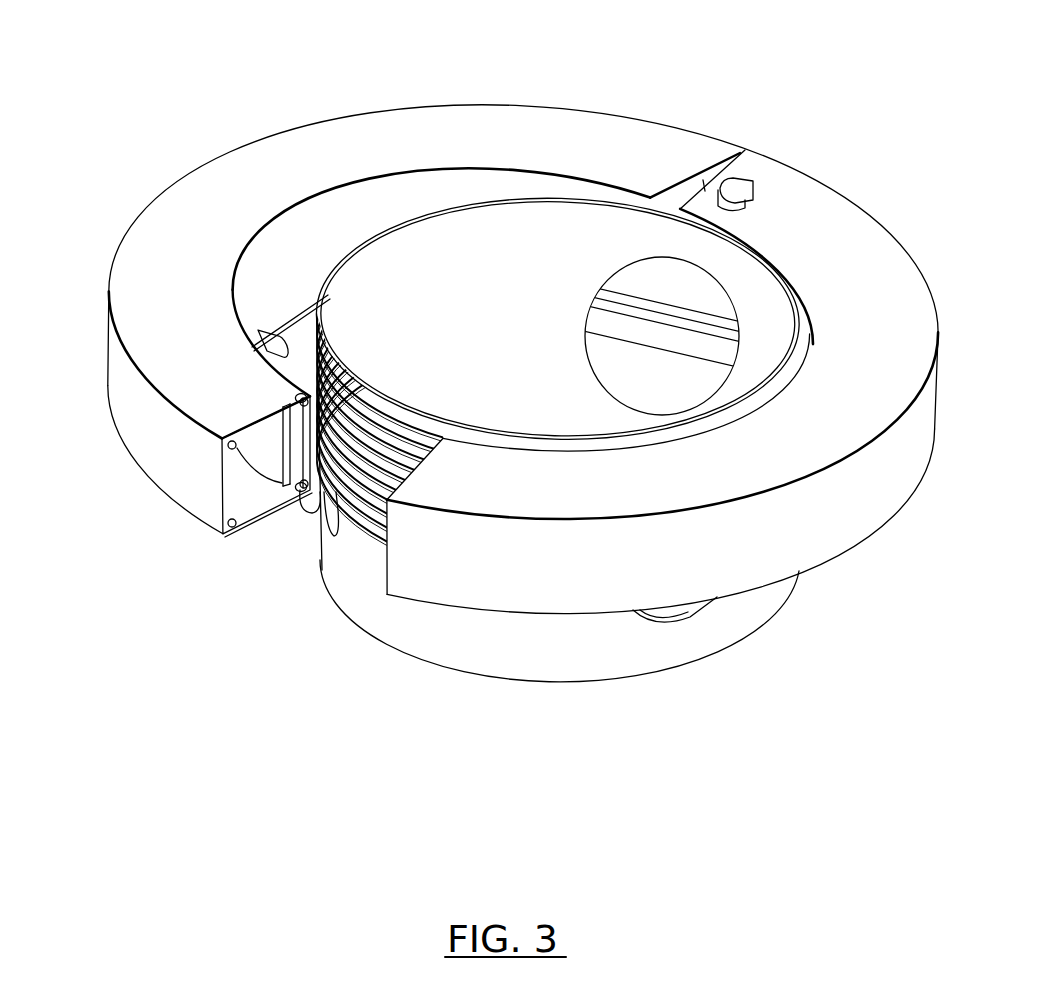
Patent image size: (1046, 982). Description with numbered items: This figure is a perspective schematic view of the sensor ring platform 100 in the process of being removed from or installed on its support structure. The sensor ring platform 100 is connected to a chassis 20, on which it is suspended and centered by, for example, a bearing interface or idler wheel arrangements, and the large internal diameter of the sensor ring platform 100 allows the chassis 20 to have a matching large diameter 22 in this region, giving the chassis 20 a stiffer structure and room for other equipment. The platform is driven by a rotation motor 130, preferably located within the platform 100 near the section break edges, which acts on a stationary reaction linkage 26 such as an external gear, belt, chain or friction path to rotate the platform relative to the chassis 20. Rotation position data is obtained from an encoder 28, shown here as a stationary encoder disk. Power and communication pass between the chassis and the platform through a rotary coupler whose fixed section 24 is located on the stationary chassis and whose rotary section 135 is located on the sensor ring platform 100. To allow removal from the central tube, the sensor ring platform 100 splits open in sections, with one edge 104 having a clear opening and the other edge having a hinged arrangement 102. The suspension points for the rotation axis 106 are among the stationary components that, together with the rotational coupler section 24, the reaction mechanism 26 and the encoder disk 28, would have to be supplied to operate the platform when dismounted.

The sensor ring platform 100 is at (348, 97).
The chassis 20 is at (510, 237).
The large diameter 22 is at (708, 630).
The fixed section of rotary coupler 24 is at (308, 392).
The stationary reaction linkage 26 is at (367, 493).
The encoder 28 is at (438, 432).
The hinged arrangement 102 is at (742, 152).
The edge having a clear opening 104 is at (222, 503).
The suspension points for the rotation axis 106 is at (262, 332).
The rotation motor 130 is at (745, 186).
The rotary section of rotary coupler 135 is at (287, 445).